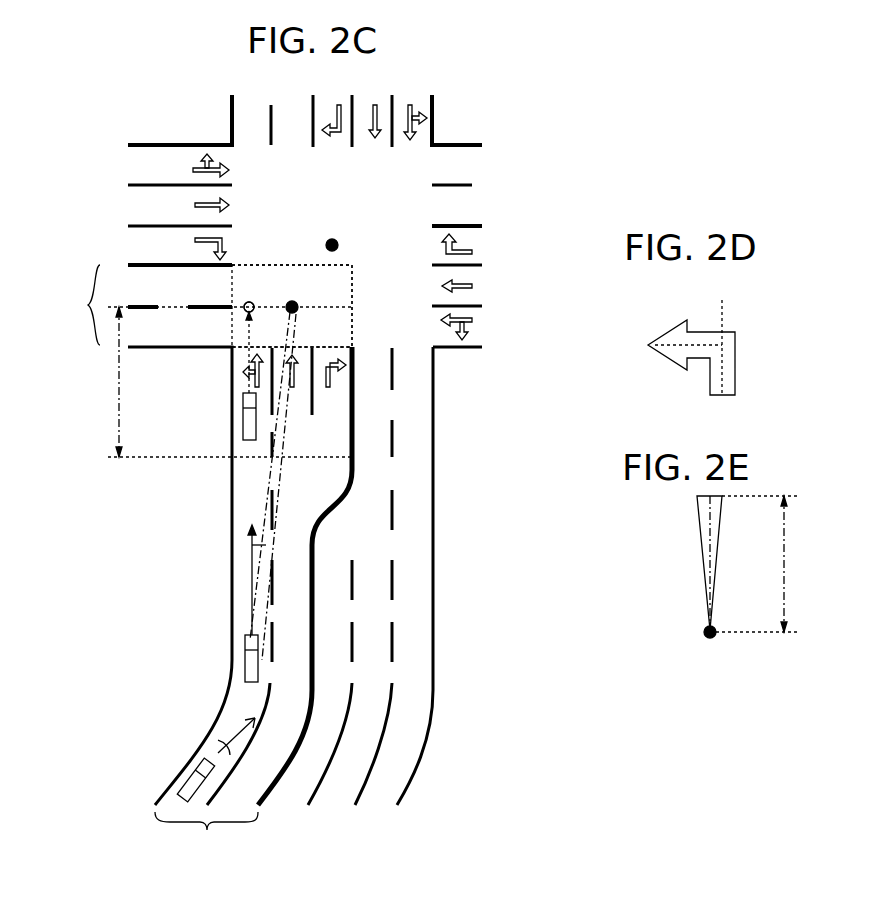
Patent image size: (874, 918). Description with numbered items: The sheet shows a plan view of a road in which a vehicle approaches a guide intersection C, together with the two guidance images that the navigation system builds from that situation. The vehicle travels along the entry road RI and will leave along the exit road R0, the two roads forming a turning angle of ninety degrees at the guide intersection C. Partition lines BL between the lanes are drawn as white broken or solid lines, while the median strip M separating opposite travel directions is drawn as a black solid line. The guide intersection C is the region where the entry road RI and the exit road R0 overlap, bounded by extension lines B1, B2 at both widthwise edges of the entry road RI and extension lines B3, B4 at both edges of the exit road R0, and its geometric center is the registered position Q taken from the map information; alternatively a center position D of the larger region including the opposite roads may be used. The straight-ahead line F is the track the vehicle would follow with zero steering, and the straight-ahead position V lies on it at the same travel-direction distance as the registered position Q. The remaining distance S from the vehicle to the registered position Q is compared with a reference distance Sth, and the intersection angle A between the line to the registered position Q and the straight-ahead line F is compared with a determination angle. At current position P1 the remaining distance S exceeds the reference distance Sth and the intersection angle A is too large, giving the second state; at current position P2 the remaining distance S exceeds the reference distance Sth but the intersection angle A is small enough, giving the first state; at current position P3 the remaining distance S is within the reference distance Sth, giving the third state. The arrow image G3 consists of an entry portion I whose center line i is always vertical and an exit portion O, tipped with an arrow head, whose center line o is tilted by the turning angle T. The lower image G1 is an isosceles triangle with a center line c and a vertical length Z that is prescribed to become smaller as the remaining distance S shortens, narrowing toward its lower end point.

In FIG. 2C, the exit road R0 is at (78, 305).
In FIG. 2C, the reference distance Sth is at (137, 382).
In FIG. 2C, the extension line B1 is at (232, 289).
In FIG. 2C, the extension line B2 is at (352, 290).
In FIG. 2C, the extension line B3 is at (240, 357).
In FIG. 2C, the extension line B4 is at (350, 264).
In FIG. 2C, the guide intersection C is at (250, 300).
In FIG. 2C, the straight-ahead position V is at (248, 300).
In FIG. 2C, the registered position Q is at (291, 300).
In FIG. 2C, the center position D is at (332, 238).
In FIG. 2C, the median strip M is at (357, 470).
In FIG. 2C, the partition line BL is at (276, 500).
In FIG. 2C, the remaining distance S is at (198, 500).
In FIG. 2C, the straight-ahead line F is at (235, 340).
In FIG. 2C, the intersection angle A is at (263, 545).
In FIG. 2C, the current position P1 is at (187, 778).
In FIG. 2C, the current position P2 is at (247, 640).
In FIG. 2C, the current position P3 is at (243, 408).
In FIG. 2C, the entry road RI is at (206, 839).
In FIG. 2D, the arrow image G3 is at (668, 326).
In FIG. 2D, the turning angle T is at (700, 340).
In FIG. 2D, the entry portion I is at (737, 355).
In FIG. 2D, the center line i is at (748, 378).
In FIG. 2D, the center line o is at (648, 356).
In FIG. 2D, the exit portion O is at (685, 365).
In FIG. 2E, the lower image G1 is at (703, 560).
In FIG. 2E, the center line c is at (700, 515).
In FIG. 2E, the length Z is at (764, 564).